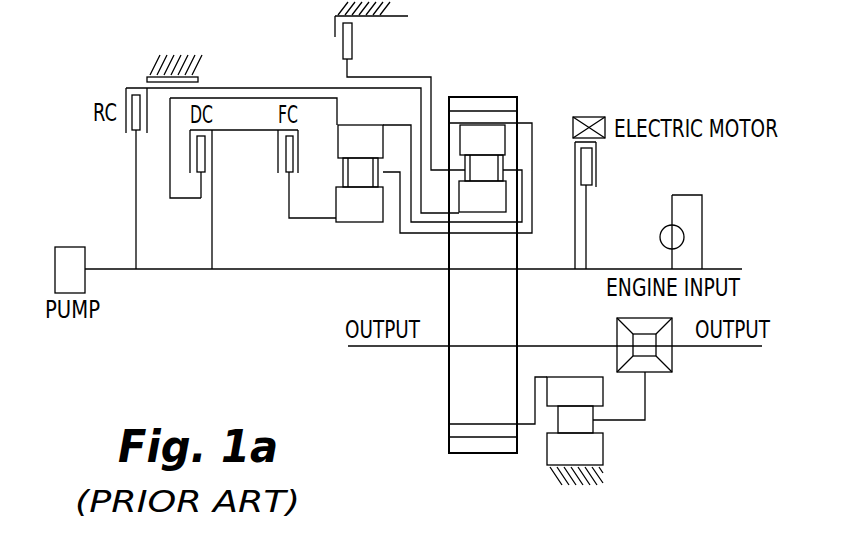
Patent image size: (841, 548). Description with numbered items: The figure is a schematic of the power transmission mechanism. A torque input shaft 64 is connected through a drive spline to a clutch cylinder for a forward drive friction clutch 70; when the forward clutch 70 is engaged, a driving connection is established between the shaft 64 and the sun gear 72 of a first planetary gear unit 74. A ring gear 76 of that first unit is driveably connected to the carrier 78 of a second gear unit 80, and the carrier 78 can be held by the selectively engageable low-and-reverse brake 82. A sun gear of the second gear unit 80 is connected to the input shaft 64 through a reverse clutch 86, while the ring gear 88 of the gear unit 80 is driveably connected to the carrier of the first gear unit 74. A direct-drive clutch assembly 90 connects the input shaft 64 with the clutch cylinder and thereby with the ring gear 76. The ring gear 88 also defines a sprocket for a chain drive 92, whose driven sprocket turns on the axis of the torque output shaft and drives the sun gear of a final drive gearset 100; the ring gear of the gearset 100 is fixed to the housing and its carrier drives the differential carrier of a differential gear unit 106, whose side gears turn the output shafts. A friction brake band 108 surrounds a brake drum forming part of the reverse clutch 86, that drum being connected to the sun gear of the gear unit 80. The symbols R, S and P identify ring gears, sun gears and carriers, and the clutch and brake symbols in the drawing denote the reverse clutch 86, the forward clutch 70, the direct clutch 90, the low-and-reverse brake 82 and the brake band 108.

The torque input shaft 64 is at (425, 270).
The forward drive friction clutch 70 is at (280, 158).
The sun gear 72 is at (342, 222).
The first planetary gear unit 74 is at (343, 173).
The ring gear 76 is at (382, 123).
The carrier 78 is at (505, 160).
The gear unit 80 is at (506, 198).
The low-and-reverse brake 82 is at (352, 52).
The reverse clutch 86 is at (125, 128).
The ring gear 88 is at (460, 137).
The direct-drive clutch assembly 90 is at (207, 150).
The chain drive 92 is at (517, 100).
The final drive gearset 100 is at (620, 422).
The differential gear unit 106 is at (667, 358).
The friction brake band 108 is at (147, 78).